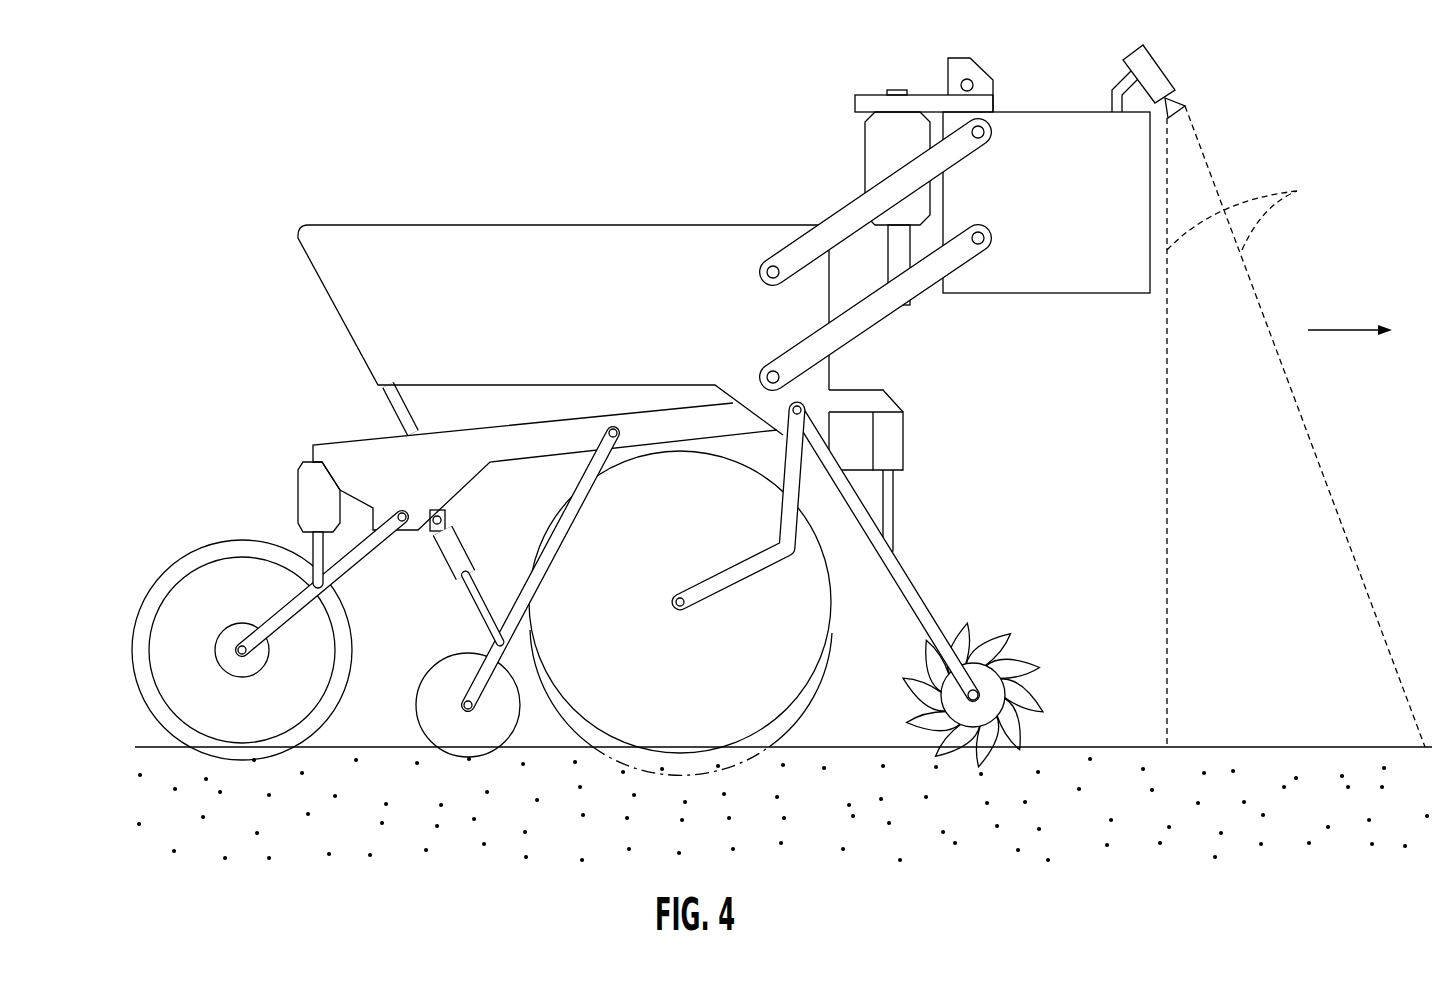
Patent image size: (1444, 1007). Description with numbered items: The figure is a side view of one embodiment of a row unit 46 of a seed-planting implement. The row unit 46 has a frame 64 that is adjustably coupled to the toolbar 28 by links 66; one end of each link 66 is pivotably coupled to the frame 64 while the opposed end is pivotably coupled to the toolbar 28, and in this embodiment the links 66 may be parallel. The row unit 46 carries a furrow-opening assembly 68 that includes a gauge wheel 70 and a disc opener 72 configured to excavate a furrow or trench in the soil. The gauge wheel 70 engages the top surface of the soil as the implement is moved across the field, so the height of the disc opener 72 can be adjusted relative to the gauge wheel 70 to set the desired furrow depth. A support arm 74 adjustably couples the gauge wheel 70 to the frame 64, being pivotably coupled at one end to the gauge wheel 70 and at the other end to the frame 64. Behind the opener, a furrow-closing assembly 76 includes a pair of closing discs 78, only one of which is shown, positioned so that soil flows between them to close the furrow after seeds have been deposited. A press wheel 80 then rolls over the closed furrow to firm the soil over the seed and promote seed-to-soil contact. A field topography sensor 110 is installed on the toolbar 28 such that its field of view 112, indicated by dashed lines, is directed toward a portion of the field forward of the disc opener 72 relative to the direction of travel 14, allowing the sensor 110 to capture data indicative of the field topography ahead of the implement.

The direction of travel 14 is at (1352, 330).
The toolbar 28 is at (1055, 293).
The row unit 46 is at (325, 130).
The frame 64 is at (570, 224).
The links 66 is at (965, 158).
The furrow-opening assembly 68 is at (848, 665).
The gauge wheel 70 is at (832, 568).
The disc opener 72 is at (620, 760).
The support arm 74 is at (722, 600).
The furrow-closing assembly 76 is at (436, 760).
The closing discs 78 is at (420, 718).
The press wheel 80 is at (135, 648).
The field topography sensor 110 is at (1166, 74).
The field of view 112 is at (1297, 191).